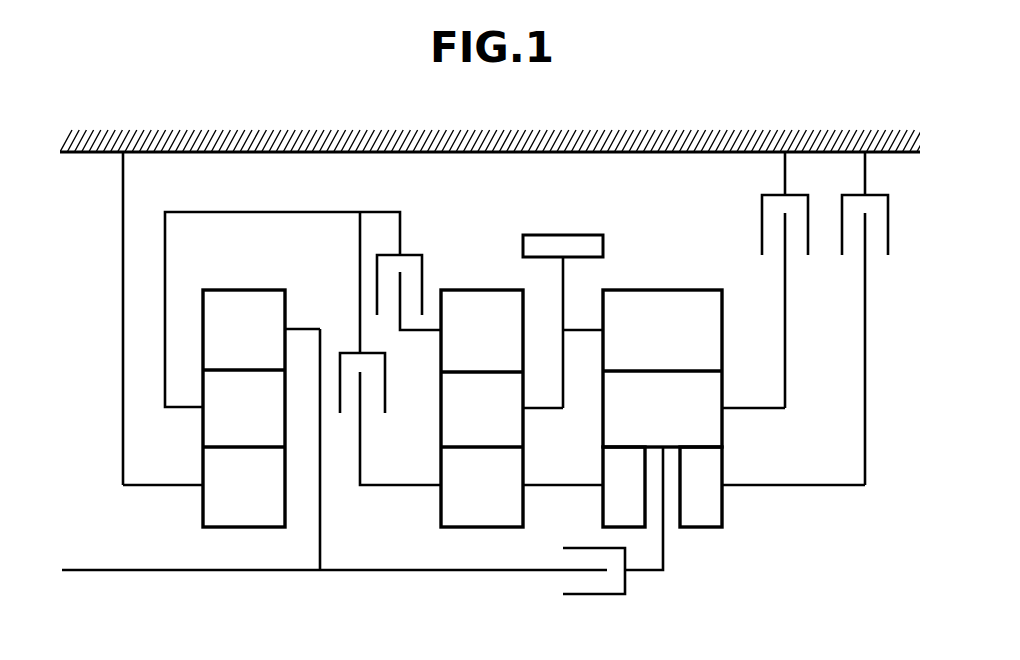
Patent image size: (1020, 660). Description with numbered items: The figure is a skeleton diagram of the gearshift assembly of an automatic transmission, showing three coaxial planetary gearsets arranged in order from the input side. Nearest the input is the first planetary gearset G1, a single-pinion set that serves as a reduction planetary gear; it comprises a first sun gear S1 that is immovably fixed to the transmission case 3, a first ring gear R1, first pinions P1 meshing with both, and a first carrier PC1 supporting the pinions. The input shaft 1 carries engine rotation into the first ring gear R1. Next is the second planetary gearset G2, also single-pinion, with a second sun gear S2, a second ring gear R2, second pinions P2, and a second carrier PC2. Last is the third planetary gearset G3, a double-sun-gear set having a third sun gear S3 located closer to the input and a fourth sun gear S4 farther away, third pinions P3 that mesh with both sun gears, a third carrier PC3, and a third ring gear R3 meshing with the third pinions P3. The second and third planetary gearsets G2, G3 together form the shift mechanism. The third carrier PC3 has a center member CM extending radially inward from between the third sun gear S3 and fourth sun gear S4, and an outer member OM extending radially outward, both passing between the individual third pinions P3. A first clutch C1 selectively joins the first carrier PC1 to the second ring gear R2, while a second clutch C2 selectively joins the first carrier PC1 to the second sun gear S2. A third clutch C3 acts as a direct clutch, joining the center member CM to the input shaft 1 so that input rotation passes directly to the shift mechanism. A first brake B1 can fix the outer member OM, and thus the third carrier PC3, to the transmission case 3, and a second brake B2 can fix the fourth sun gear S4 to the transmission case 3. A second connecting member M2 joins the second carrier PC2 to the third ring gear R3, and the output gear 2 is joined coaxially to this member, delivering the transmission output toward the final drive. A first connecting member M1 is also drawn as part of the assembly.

The input shaft 1 is at (146, 574).
The output gear 2 is at (603, 243).
The transmission case 3 is at (536, 150).
The first planetary gearset G1 is at (262, 282).
The second planetary gearset G2 is at (500, 282).
The third planetary gearset G3 is at (681, 282).
The first ring gear R1 is at (273, 444).
The first pinions P1 is at (242, 411).
The first sun gear S1 is at (191, 328).
The second ring gear R2 is at (481, 333).
The second pinions P2 is at (480, 411).
The second sun gear S2 is at (480, 489).
The third ring gear R3 is at (662, 333).
The third pinions P3 is at (661, 411).
The third sun gear S3 is at (622, 489).
The fourth sun gear S4 is at (699, 489).
The first clutch C1 is at (412, 275).
The second clutch C2 is at (390, 419).
The third clutch C3 is at (614, 581).
The first brake B1 is at (793, 203).
The second brake B2 is at (873, 318).
The first carrier PC1 is at (182, 409).
The second carrier PC2 is at (548, 410).
The third carrier PC3 is at (746, 408).
The first connecting member M1 is at (562, 488).
The second connecting member M2 is at (563, 384).
The outer member OM is at (787, 365).
The center member CM is at (665, 548).